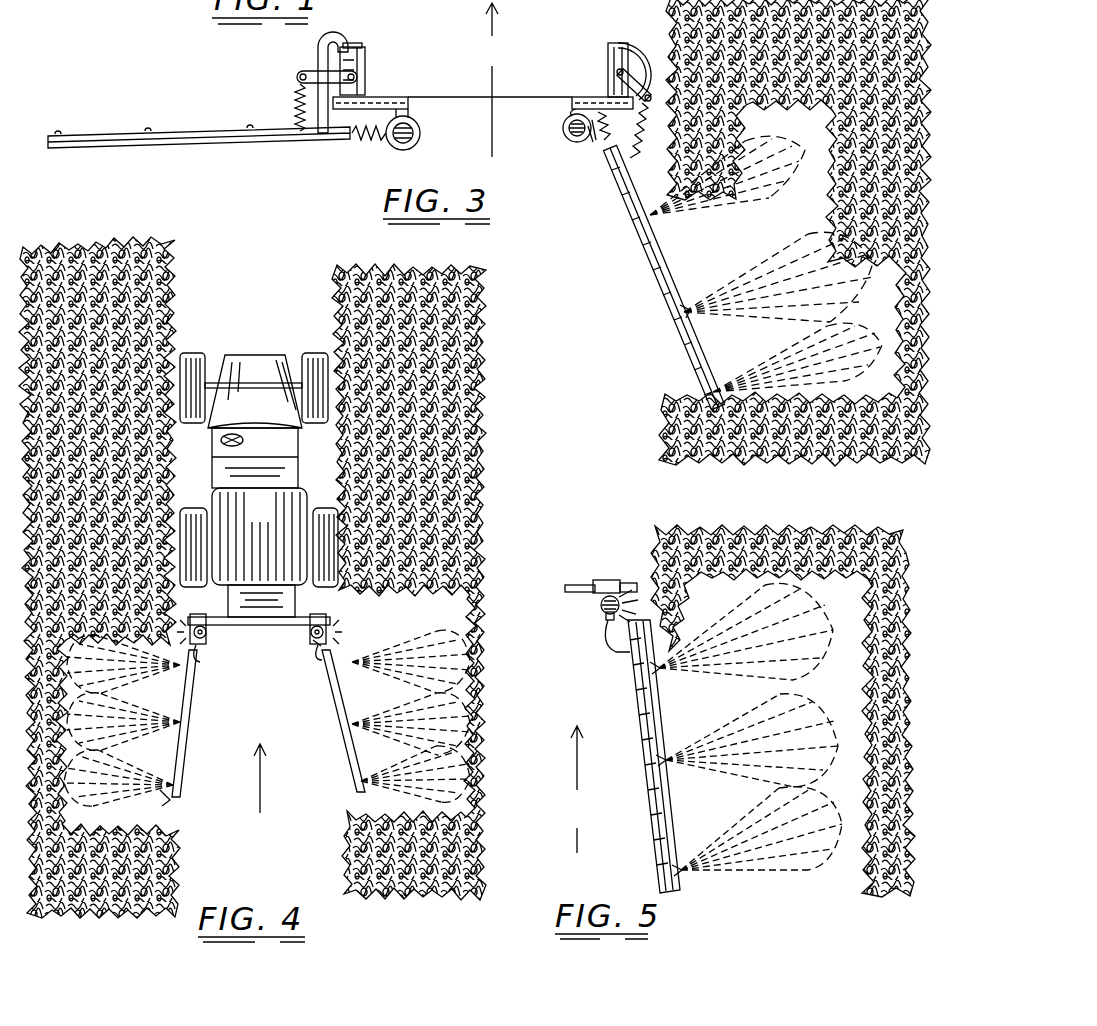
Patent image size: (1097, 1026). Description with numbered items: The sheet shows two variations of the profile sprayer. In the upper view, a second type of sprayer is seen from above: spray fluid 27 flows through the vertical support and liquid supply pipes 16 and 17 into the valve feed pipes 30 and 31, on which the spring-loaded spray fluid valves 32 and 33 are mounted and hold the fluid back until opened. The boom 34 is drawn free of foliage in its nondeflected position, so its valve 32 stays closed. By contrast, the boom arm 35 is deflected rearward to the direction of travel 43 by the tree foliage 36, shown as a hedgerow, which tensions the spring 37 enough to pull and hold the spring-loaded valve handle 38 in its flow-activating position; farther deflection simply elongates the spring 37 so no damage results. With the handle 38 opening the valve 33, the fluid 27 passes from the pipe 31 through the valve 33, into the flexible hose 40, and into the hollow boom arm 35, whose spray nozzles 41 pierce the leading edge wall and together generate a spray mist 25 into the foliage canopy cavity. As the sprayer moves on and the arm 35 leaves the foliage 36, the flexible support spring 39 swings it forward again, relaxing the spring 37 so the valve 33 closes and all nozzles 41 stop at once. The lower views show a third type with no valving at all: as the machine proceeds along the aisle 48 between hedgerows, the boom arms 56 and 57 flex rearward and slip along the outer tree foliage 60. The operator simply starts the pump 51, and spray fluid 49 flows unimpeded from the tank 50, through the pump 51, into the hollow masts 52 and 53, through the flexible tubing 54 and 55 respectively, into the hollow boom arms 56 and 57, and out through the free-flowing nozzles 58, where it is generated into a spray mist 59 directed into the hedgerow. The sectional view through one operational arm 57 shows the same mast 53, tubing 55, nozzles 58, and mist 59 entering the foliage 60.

In FIG. 3, the vertical support and liquid supply pipe 16 is at (422, 124).
In FIG. 3, the vertical support and liquid supply pipe 17 is at (563, 135).
In FIG. 3, the spray mist 25 is at (818, 275).
In FIG. 3, the spray fluid 27 is at (566, 122).
In FIG. 3, the valve feed pipe 30 is at (380, 97).
In FIG. 3, the valve feed pipe 31 is at (572, 105).
In FIG. 3, the spray fluid valve 32 is at (362, 57).
In FIG. 3, the spray fluid valve 33 is at (615, 60).
In FIG. 3, the boom 34 is at (218, 128).
In FIG. 3, the boom arm 35 is at (646, 232).
In FIG. 3, the tree foliage 36 is at (680, 437).
In FIG. 3, the tensioning spring 37 is at (632, 150).
In FIG. 3, the valve handle 38 is at (641, 90).
In FIG. 3, the flexible support spring 39 is at (603, 135).
In FIG. 3, the flexible hose 40 is at (645, 40).
In FIG. 3, the spray nozzle 41 is at (688, 313).
In FIG. 3, the direction of travel 43 is at (504, 62).
In FIG. 4, the aisle 48 is at (275, 846).
In FIG. 5, the aisle 48 is at (590, 820).
In FIG. 4, the spray fluid 49 is at (312, 631).
In FIG. 5, the spray fluid 49 is at (600, 606).
In FIG. 4, the tank 50 is at (272, 520).
In FIG. 4, the pump 51 is at (287, 592).
In FIG. 4, the hollow mast 52 is at (208, 637).
In FIG. 4, the hollow mast 53 is at (313, 641).
In FIG. 5, the hollow mast 53 is at (605, 616).
In FIG. 4, the flexible tubing 54 is at (203, 661).
In FIG. 4, the flexible tubing 55 is at (318, 657).
In FIG. 5, the flexible tubing 55 is at (606, 640).
In FIG. 4, the boom arm 56 is at (184, 693).
In FIG. 4, the boom arm 57 is at (337, 692).
In FIG. 5, the boom arm 57 is at (640, 726).
In FIG. 4, the nozzle 58 is at (176, 726).
In FIG. 5, the nozzle 58 is at (657, 668).
In FIG. 5, the spray mist 59 is at (784, 604).
In FIG. 4, the tree foliage 60 is at (170, 809).
In FIG. 5, the tree foliage 60 is at (676, 570).